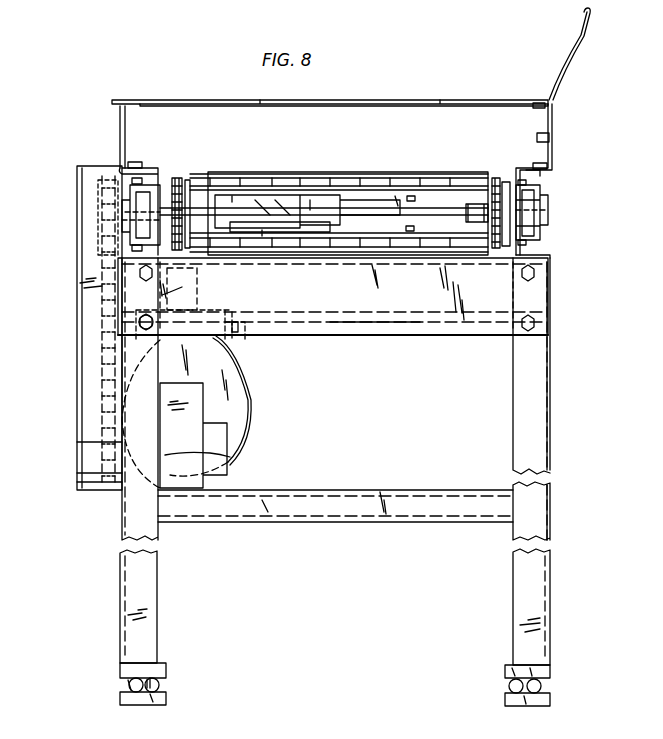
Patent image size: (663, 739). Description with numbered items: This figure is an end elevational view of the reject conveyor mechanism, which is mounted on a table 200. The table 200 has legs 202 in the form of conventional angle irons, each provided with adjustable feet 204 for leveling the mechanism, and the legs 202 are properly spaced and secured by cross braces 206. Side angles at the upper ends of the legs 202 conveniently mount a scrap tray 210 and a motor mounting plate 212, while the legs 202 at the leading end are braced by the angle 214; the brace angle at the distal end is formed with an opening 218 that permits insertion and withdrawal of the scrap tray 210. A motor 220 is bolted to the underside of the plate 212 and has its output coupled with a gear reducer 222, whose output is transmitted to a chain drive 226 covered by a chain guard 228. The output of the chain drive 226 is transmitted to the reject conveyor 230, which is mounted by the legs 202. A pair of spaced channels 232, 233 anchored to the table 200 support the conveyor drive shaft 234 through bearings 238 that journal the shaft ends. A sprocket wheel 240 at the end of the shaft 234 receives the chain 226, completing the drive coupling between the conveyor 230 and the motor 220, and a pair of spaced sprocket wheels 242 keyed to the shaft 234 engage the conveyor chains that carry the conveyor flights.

The table 200 is at (582, 405).
The legs 202 is at (158, 608).
The adjustable feet 204 is at (163, 695).
The cross braces 206 is at (402, 498).
The scrap tray 210 is at (372, 318).
The motor mounting plate 212 is at (234, 336).
The angle 214 is at (462, 330).
The opening 218 is at (165, 287).
The motor 220 is at (250, 420).
The gear reducer 222 is at (224, 453).
The chain drive 226 is at (100, 420).
The chain guard 228 is at (80, 363).
The reject conveyor 230 is at (415, 176).
The channel 232 is at (118, 172).
The channel 233 is at (545, 172).
The conveyor drive shaft 234 is at (474, 205).
The bearings 238 is at (142, 212).
The sprocket wheel 240 is at (104, 196).
The sprocket wheels 242 is at (176, 180).